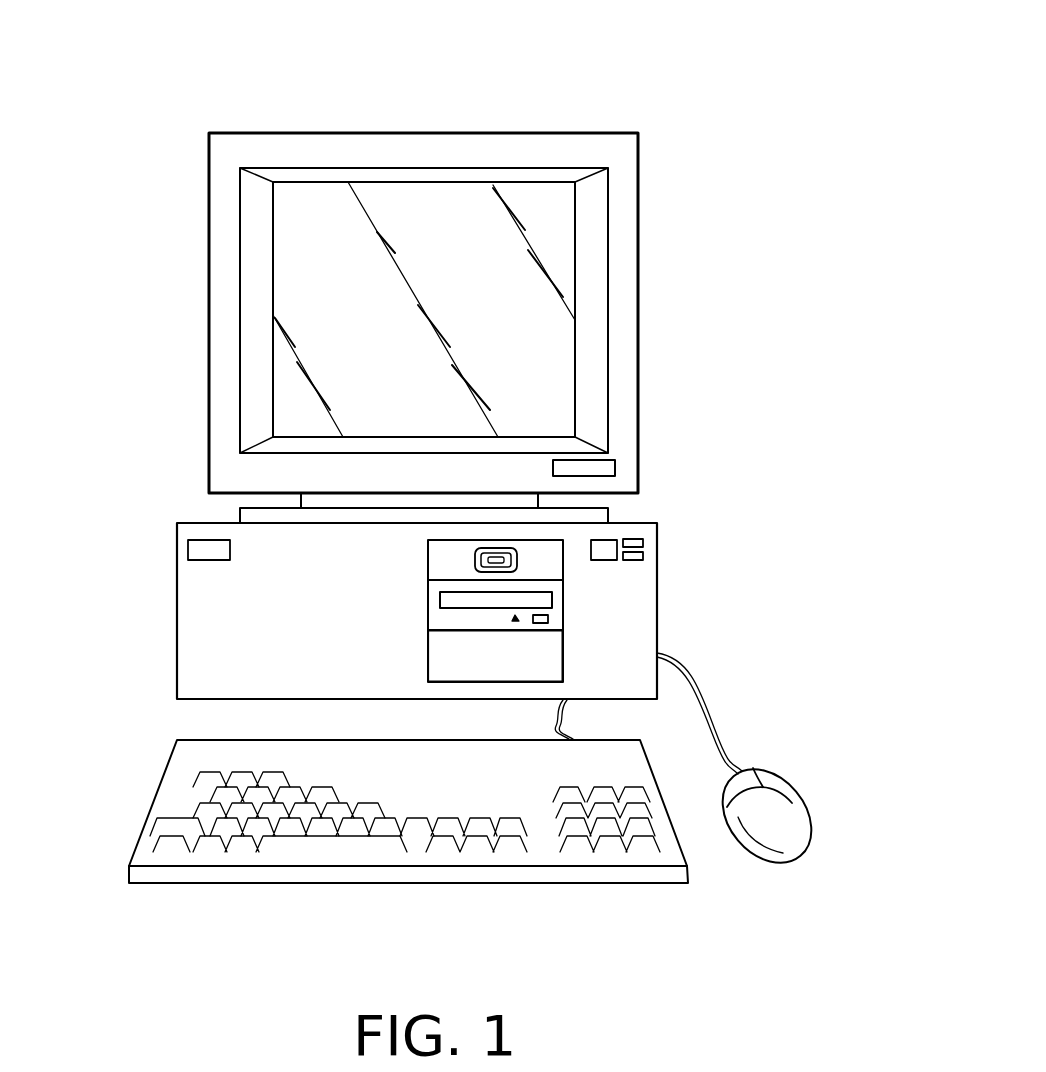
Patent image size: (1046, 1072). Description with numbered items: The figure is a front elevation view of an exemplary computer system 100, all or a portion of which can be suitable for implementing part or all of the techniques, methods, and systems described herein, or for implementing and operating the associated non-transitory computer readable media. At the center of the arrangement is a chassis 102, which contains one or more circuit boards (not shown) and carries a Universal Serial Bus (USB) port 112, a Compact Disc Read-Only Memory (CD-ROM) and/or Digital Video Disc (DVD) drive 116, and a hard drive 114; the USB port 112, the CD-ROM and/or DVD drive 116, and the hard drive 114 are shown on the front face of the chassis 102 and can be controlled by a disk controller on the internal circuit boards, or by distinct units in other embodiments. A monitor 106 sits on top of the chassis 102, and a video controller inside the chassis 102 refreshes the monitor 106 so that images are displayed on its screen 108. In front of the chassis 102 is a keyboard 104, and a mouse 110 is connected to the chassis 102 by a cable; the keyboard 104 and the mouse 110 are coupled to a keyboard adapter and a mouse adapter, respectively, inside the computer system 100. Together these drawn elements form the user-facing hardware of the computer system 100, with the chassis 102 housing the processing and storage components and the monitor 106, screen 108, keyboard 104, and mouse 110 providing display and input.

The computer system 100 is at (630, 105).
The chassis 102 is at (177, 613).
The keyboard 104 is at (157, 793).
The monitor 106 is at (297, 133).
The screen 108 is at (327, 315).
The mouse 110 is at (788, 805).
The Universal Serial Bus (USB) port 112 is at (517, 562).
The hard drive 114 is at (552, 656).
The Compact Disc Read-Only Memory (CD-ROM) and/or Digital Video Disc (DVD) drive 116 is at (552, 607).